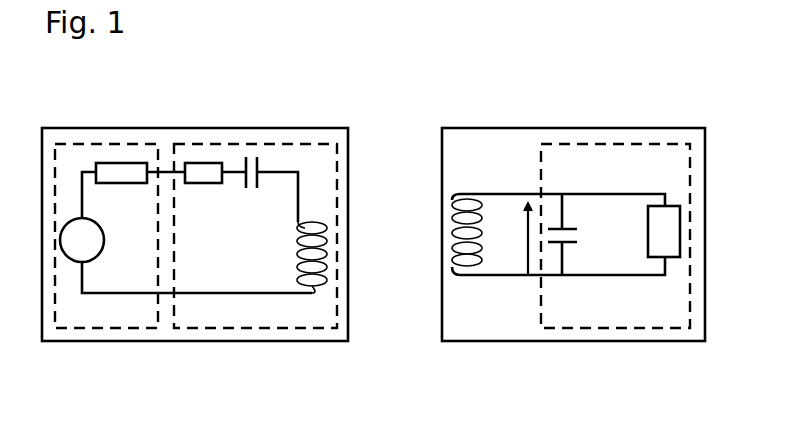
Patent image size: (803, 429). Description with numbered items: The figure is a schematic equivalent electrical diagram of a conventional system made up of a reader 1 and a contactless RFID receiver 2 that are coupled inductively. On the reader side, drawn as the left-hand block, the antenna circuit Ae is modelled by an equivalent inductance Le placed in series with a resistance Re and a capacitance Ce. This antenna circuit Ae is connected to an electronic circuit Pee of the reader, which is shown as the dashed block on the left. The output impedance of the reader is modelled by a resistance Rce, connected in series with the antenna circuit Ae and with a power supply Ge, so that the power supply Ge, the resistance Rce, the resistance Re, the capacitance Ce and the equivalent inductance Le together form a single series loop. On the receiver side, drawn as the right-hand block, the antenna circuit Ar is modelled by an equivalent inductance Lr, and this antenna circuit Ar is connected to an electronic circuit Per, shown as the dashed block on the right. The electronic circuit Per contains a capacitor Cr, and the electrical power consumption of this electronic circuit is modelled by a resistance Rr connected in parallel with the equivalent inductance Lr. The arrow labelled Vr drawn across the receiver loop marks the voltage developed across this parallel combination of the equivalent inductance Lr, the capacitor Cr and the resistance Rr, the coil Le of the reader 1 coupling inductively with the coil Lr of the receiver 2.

The reader 1 is at (194, 344).
The contactless RFID receiver 2 is at (573, 344).
The electronic circuit of the reader Pee is at (108, 143).
The resistance Rce is at (120, 163).
The antenna circuit Ae is at (257, 143).
The power supply Ge is at (104, 240).
The resistance Re is at (203, 183).
The capacitance Ce is at (248, 188).
The equivalent inductance Le is at (317, 293).
The electronic circuit Per is at (615, 143).
The antenna circuit Ar is at (487, 293).
The equivalent inductance Lr is at (450, 232).
The capacitor Cr is at (580, 235).
The resistance Rr is at (682, 228).
The received voltage Vr is at (513, 239).